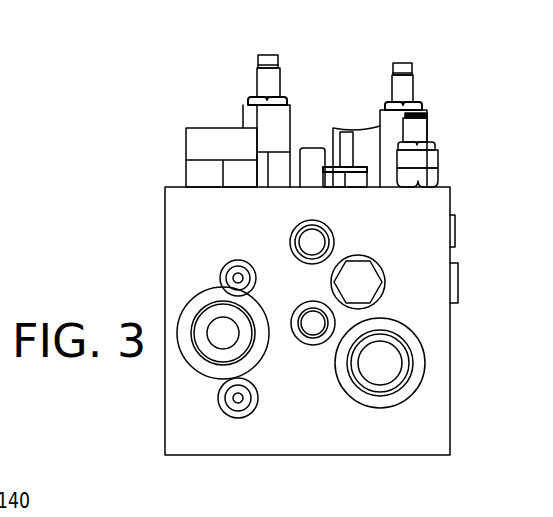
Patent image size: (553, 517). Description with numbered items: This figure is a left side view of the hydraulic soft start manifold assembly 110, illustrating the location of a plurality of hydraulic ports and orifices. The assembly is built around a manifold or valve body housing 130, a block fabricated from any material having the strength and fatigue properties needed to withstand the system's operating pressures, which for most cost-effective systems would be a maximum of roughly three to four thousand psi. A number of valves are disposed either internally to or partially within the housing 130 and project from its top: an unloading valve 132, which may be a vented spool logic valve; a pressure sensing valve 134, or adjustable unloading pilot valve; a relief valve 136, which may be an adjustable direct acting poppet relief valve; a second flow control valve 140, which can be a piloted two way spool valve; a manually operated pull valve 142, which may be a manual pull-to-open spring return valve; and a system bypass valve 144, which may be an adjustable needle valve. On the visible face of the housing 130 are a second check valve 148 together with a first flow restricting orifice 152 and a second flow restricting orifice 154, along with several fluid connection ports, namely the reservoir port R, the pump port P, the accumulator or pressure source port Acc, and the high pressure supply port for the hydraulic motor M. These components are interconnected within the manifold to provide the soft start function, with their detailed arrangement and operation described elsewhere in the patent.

The manifold assembly 110 is at (463, 140).
The valve body housing 130 is at (427, 423).
The unloading valve 132 is at (313, 153).
The pressure sensing valve 134 is at (258, 68).
The relief valve 136 is at (405, 68).
The second flow control valve 140 is at (198, 132).
The manually operated pull valve 142 is at (340, 188).
The system bypass valve 144 is at (423, 164).
The second check valve 148 is at (364, 280).
The first flow restricting orifice 152 is at (232, 268).
The second flow restricting orifice 154 is at (237, 398).
The reservoir port R is at (305, 240).
The high pressure supply port for the hydraulic motor M is at (222, 327).
The pump port P is at (313, 328).
The accumulator or pressure source port Acc is at (387, 362).